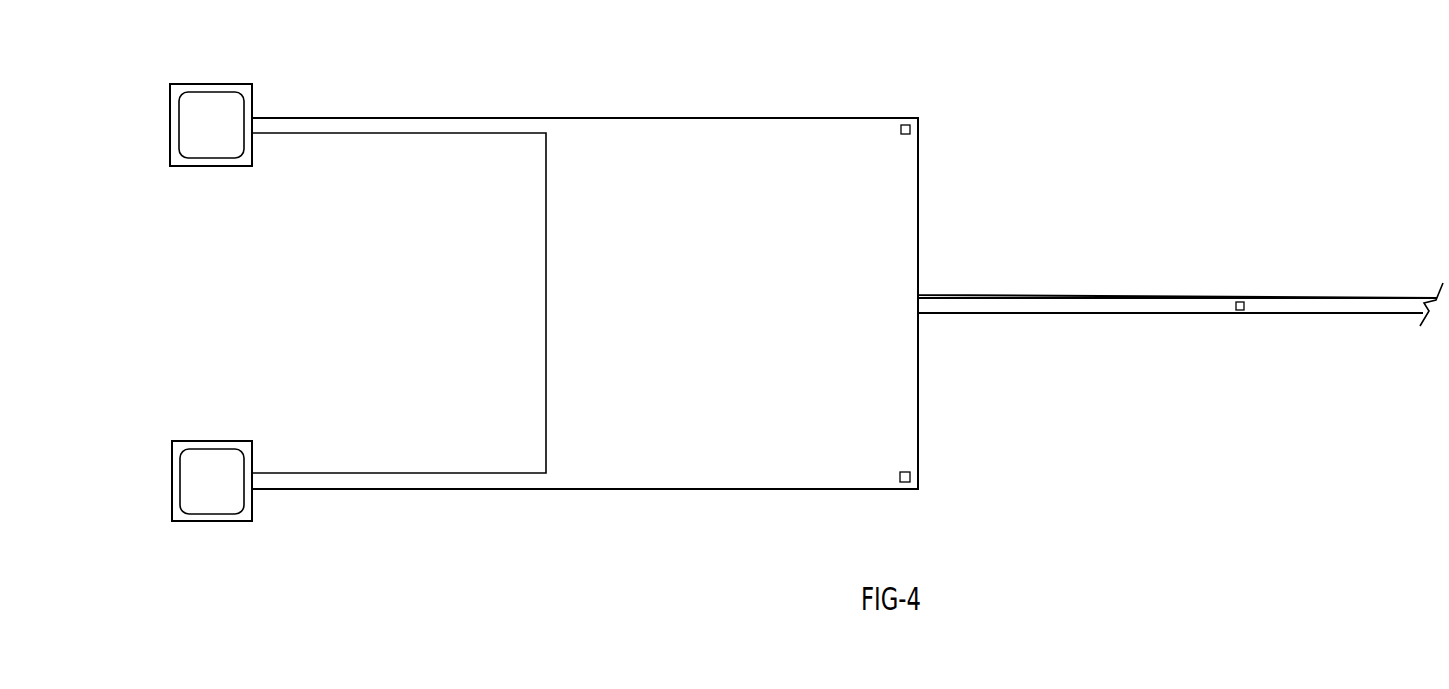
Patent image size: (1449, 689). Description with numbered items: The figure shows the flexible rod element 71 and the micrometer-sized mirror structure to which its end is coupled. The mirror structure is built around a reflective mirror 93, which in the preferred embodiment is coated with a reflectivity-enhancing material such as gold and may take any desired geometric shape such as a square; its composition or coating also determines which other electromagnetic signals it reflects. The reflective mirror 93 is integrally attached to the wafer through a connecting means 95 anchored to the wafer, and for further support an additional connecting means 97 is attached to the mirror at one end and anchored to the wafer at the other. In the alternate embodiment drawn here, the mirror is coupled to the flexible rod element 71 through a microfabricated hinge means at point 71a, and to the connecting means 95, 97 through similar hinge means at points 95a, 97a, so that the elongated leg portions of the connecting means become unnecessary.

The reflective mirror 93 is at (742, 297).
The connecting means 95 is at (230, 137).
The additional connecting means 97 is at (230, 494).
The hinge point 95a is at (557, 118).
The hinge point 97a is at (548, 489).
The flexible rod element 71 is at (1298, 298).
The hinge point 71a is at (926, 290).